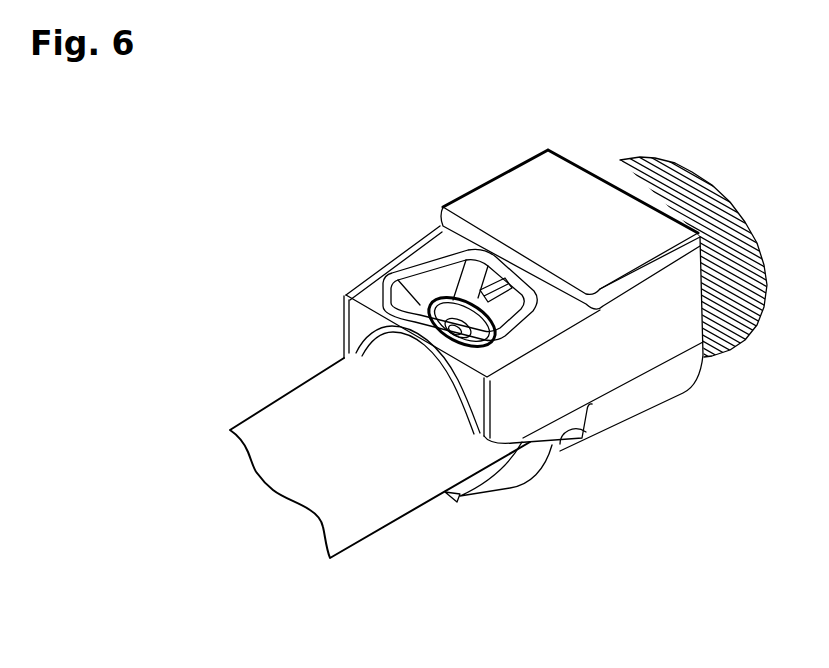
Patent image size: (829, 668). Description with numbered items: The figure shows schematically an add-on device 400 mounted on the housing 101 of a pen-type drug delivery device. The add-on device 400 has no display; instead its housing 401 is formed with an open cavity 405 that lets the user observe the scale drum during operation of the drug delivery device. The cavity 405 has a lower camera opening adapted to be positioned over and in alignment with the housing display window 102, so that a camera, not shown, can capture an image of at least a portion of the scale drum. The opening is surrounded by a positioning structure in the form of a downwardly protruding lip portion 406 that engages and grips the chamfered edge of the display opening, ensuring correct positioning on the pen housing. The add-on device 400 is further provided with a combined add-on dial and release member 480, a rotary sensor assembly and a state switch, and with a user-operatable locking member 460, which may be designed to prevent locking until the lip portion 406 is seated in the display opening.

The housing 101 is at (437, 477).
The housing display window 102 is at (450, 318).
The add-on device 400 is at (588, 163).
The housing 401 is at (640, 357).
The cavity 405 is at (408, 267).
The lip portion 406 is at (407, 296).
The locking member 460 is at (523, 468).
The combined add-on dial and release member 480 is at (737, 353).